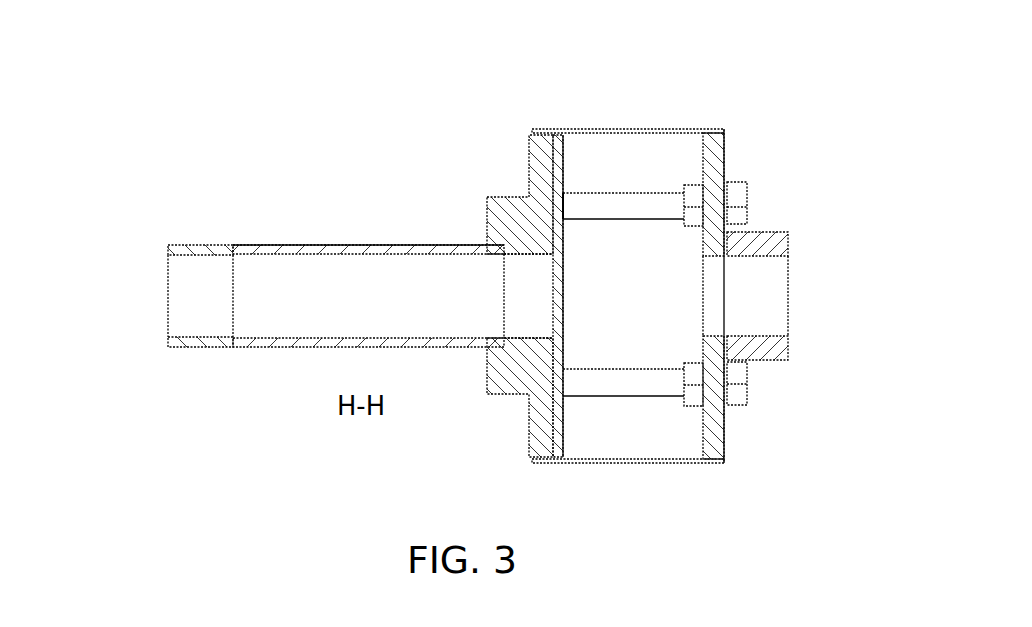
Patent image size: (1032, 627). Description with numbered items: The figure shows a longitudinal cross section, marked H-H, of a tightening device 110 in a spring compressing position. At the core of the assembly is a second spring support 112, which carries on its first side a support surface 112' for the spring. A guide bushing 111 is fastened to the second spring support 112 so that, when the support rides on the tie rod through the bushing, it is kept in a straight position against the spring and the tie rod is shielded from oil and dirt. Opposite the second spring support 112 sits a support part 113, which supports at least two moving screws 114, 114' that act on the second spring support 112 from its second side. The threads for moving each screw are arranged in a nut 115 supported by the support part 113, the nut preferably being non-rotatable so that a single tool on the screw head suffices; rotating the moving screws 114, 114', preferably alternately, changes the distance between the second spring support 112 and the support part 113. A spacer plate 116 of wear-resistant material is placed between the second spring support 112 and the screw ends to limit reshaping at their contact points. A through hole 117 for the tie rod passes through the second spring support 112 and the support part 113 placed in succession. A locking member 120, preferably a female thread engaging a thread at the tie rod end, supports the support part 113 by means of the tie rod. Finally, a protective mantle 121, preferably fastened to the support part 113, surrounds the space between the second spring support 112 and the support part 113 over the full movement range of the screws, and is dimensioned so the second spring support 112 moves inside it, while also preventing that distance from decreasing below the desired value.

The tightening device 110 is at (366, 88).
The guide bushing 111 is at (322, 244).
The second spring support 112 is at (565, 256).
The support surface 112' is at (495, 272).
The support part 113 is at (718, 147).
The moving screw 114 is at (776, 173).
The moving screw 114' is at (791, 405).
The nut 115 is at (693, 219).
The spacer plate 116 is at (561, 225).
The through hole 117 is at (188, 296).
The locking member 120 is at (766, 255).
The protective mantle 121 is at (613, 128).